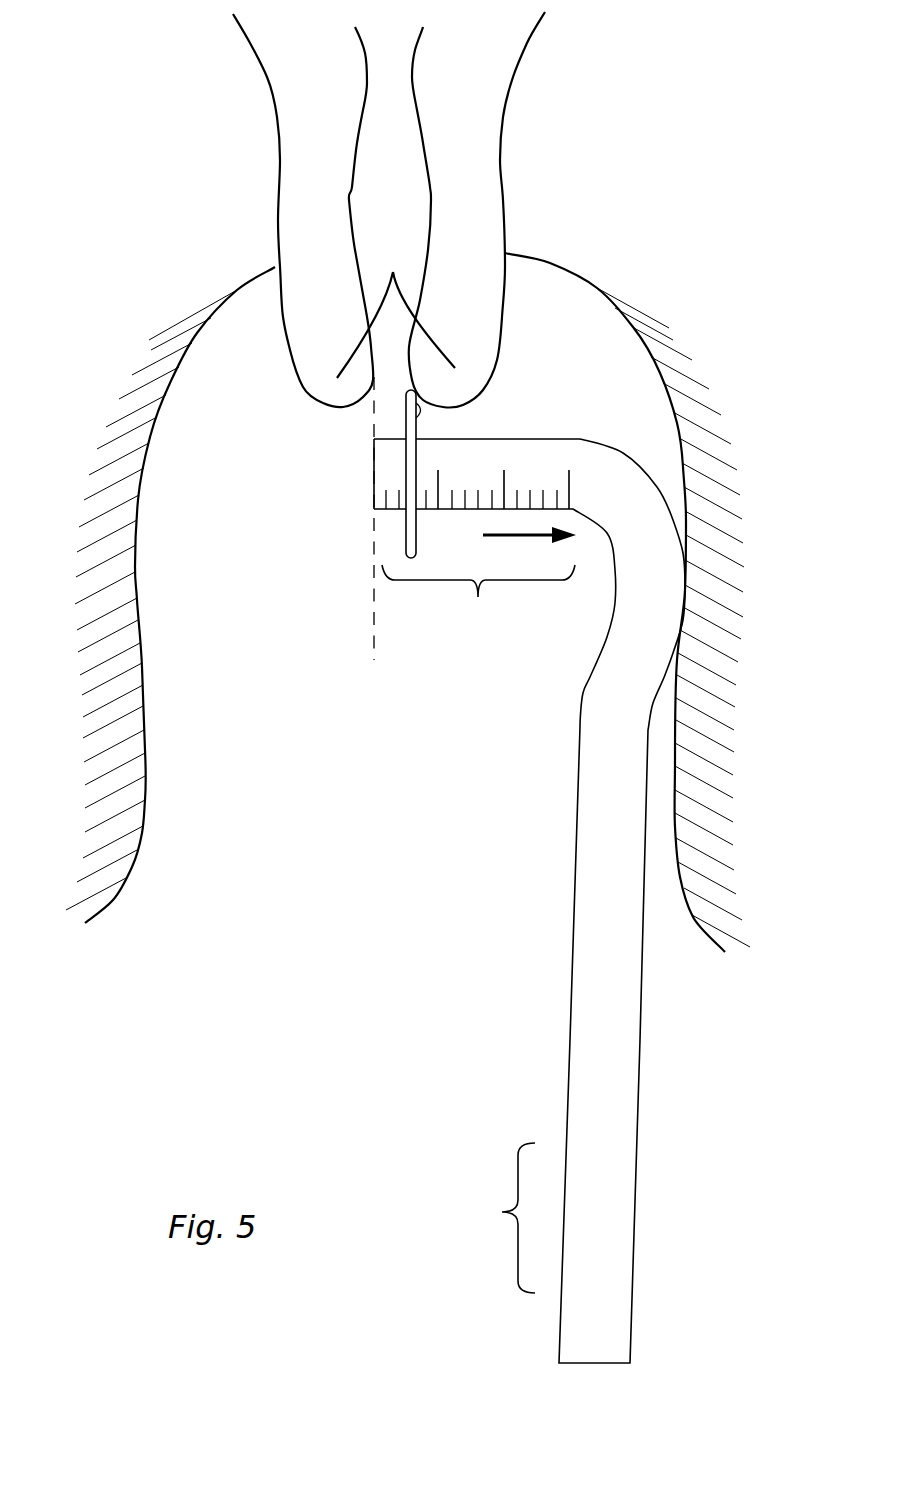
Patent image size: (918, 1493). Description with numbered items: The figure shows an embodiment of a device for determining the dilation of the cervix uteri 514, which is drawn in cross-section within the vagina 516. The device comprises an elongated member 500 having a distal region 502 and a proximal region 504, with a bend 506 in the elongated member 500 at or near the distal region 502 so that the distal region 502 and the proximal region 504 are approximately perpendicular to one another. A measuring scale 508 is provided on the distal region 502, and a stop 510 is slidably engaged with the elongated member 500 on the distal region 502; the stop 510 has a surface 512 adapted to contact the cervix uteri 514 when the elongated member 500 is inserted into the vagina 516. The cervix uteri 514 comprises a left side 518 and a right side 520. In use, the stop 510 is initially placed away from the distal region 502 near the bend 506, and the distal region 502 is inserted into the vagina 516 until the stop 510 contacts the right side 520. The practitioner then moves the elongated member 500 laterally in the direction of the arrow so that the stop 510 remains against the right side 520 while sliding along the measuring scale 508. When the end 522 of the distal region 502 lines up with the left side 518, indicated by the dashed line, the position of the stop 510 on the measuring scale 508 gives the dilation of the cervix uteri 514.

The elongated member 500 is at (630, 1063).
The distal region 502 is at (478, 596).
The proximal region 504 is at (491, 1218).
The bend 506 is at (645, 522).
The measuring scale 508 is at (572, 483).
The stop 510 is at (406, 530).
The surface 512 is at (406, 429).
The cervix uteri 514 is at (393, 272).
The vagina 516 is at (220, 758).
The left side 518 is at (337, 407).
The right side 520 is at (443, 408).
The end 522 is at (375, 475).